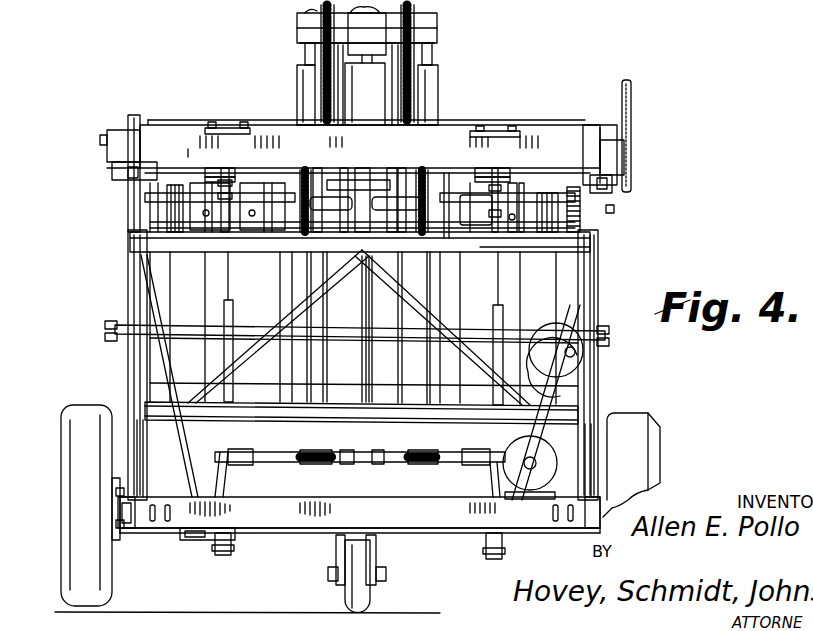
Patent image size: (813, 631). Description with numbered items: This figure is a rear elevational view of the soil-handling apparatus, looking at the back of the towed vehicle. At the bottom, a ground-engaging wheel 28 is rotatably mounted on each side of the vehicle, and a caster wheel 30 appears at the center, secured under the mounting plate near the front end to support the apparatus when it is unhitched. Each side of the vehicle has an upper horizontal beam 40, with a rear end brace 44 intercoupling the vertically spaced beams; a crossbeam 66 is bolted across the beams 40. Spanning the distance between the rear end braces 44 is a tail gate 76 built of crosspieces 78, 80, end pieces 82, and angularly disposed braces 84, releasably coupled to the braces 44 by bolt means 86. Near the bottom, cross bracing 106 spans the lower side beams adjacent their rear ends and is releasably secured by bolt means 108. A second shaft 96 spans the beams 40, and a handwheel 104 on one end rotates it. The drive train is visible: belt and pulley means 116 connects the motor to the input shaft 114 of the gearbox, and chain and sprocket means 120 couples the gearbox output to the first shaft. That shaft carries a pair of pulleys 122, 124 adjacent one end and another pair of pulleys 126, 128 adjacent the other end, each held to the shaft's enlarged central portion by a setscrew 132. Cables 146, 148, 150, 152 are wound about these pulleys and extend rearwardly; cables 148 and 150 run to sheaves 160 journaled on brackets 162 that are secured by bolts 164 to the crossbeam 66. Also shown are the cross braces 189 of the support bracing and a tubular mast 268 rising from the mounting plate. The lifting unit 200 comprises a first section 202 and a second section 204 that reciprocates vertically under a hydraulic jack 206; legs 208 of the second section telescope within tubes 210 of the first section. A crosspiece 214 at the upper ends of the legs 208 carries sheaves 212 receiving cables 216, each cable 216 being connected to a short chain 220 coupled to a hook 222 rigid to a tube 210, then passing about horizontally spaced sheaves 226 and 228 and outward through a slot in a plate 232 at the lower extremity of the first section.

The ground-engaging wheel 28 is at (90, 573).
The caster wheel 30 is at (362, 603).
The beam 40 is at (127, 182).
The rear end brace 44 is at (134, 441).
The crossbeam 66 is at (150, 136).
The tail gate 76 is at (138, 262).
The crosspiece 78 is at (532, 250).
The crosspiece 80 is at (181, 405).
The end piece 82 is at (133, 292).
The angularly disposed brace 84 is at (243, 352).
The bolt means 86 is at (260, 308).
The second shaft 96 is at (570, 130).
The handwheel 104 is at (632, 95).
The cross bracing 106 is at (295, 521).
The bolt means 108 is at (413, 538).
The input shaft 114 is at (576, 354).
The belt and pulley means 116 is at (530, 378).
The chain and sprocket means 120 is at (590, 218).
The pulley 122 is at (548, 190).
The pulley 124 is at (470, 198).
The pulley 126 is at (258, 199).
The pulley 128 is at (195, 200).
The setscrew 132 is at (214, 240).
The cable 146 is at (580, 387).
The cable 148 is at (498, 290).
The cable 150 is at (226, 288).
The cable 152 is at (183, 463).
The sheave 160 is at (223, 175).
The bracket 162 is at (205, 167).
The bolt 164 is at (238, 128).
The cross brace 189 is at (260, 534).
The unit 200 is at (293, 107).
The first section 202 is at (442, 115).
The second section 204 is at (430, 42).
The hydraulic jack 206 is at (371, 114).
The leg 208 is at (305, 53).
The tube 210 is at (302, 75).
The sheave 212 is at (318, 26).
The crosspiece 214 is at (398, 17).
The cable 216 is at (490, 483).
The short chain 220 is at (302, 172).
The hook 222 is at (302, 262).
The sheave 226 is at (303, 453).
The sheave 228 is at (229, 451).
The plate 232 is at (360, 444).
The tubular mast 268 is at (345, 13).